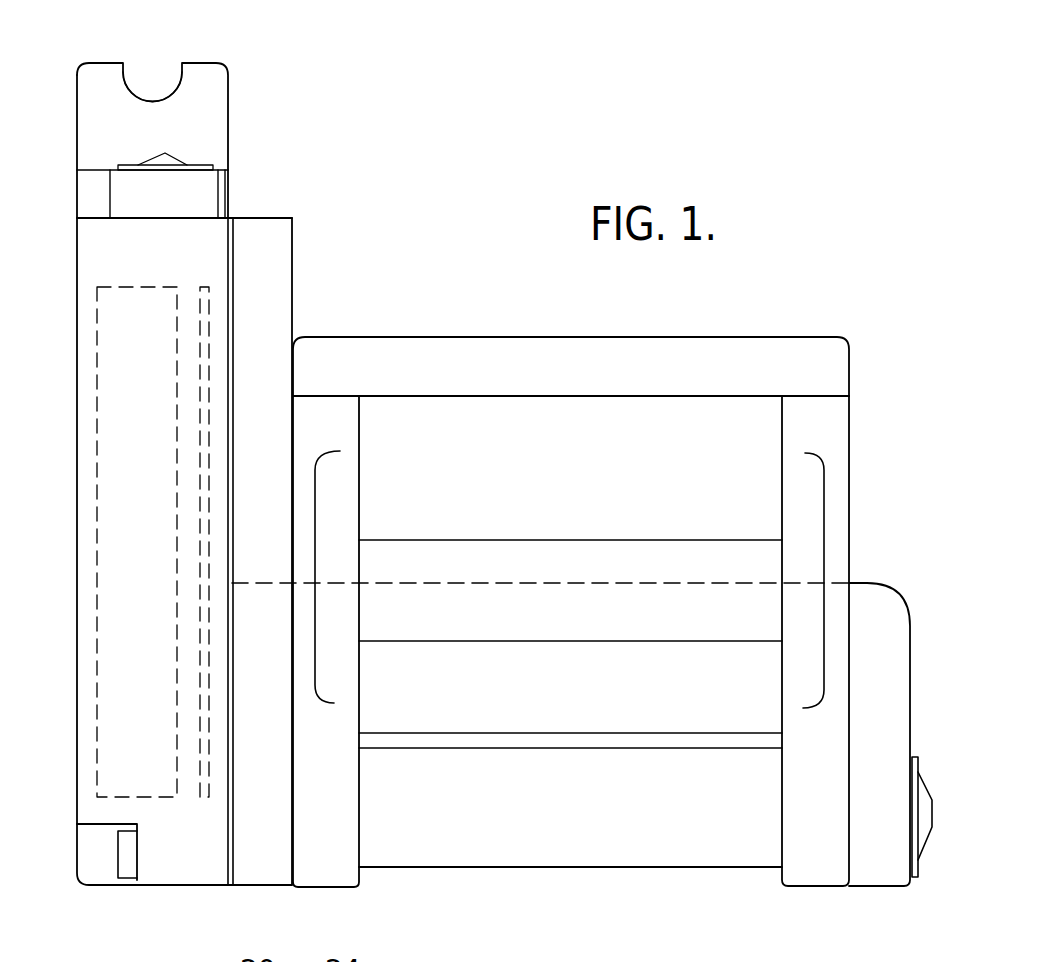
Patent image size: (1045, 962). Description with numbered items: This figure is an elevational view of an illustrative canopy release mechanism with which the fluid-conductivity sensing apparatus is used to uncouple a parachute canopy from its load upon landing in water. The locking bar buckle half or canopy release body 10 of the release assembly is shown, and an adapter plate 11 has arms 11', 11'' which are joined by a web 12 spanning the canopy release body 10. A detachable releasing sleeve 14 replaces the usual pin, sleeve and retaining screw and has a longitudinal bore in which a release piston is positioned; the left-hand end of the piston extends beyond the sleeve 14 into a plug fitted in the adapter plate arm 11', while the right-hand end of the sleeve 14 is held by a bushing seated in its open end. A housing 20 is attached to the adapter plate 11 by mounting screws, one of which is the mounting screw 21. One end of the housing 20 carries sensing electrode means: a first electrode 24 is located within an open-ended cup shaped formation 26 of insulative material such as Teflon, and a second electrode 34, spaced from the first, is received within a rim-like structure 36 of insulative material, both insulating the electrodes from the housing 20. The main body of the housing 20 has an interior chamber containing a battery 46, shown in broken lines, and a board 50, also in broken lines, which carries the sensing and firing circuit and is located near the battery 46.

The canopy release body 10 is at (463, 335).
The adapter plate 11 is at (224, 480).
The adapter plate arm 11' is at (293, 921).
The adapter plate arm 11'' is at (883, 770).
The web 12 is at (654, 583).
The detachable sleeve 14 is at (650, 867).
The housing 20 is at (196, 246).
The mounting screw 21 is at (105, 880).
The first electrode 24 is at (153, 98).
The cup shaped formation 26 is at (232, 73).
The second electrode 34 is at (180, 153).
The rim-like structure 36 is at (202, 165).
The battery 46 is at (150, 287).
The board 50 is at (209, 333).